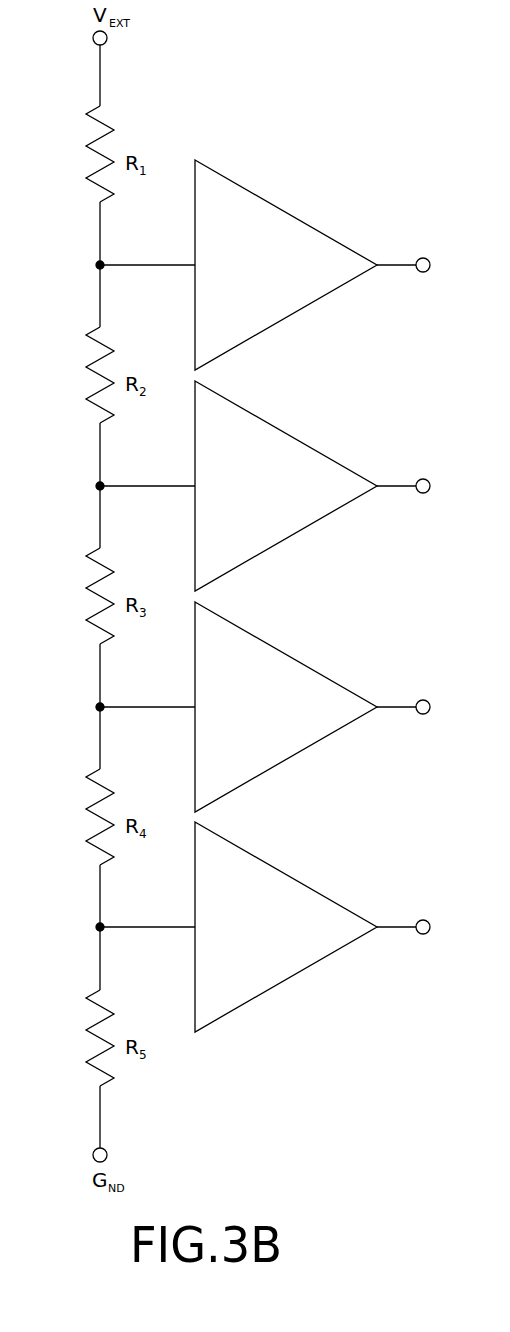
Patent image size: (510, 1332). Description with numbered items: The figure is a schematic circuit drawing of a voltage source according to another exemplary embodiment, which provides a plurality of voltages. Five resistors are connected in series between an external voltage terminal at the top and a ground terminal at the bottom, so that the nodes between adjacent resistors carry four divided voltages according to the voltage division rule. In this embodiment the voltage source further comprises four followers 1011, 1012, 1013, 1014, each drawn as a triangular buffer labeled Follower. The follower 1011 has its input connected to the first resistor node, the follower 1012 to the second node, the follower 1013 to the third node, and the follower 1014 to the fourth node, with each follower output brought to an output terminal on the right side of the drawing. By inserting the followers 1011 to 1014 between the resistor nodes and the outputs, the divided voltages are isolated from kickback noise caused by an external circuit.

The follower 1011 is at (318, 203).
The follower 1012 is at (318, 424).
The follower 1013 is at (318, 645).
The follower 1014 is at (318, 865).